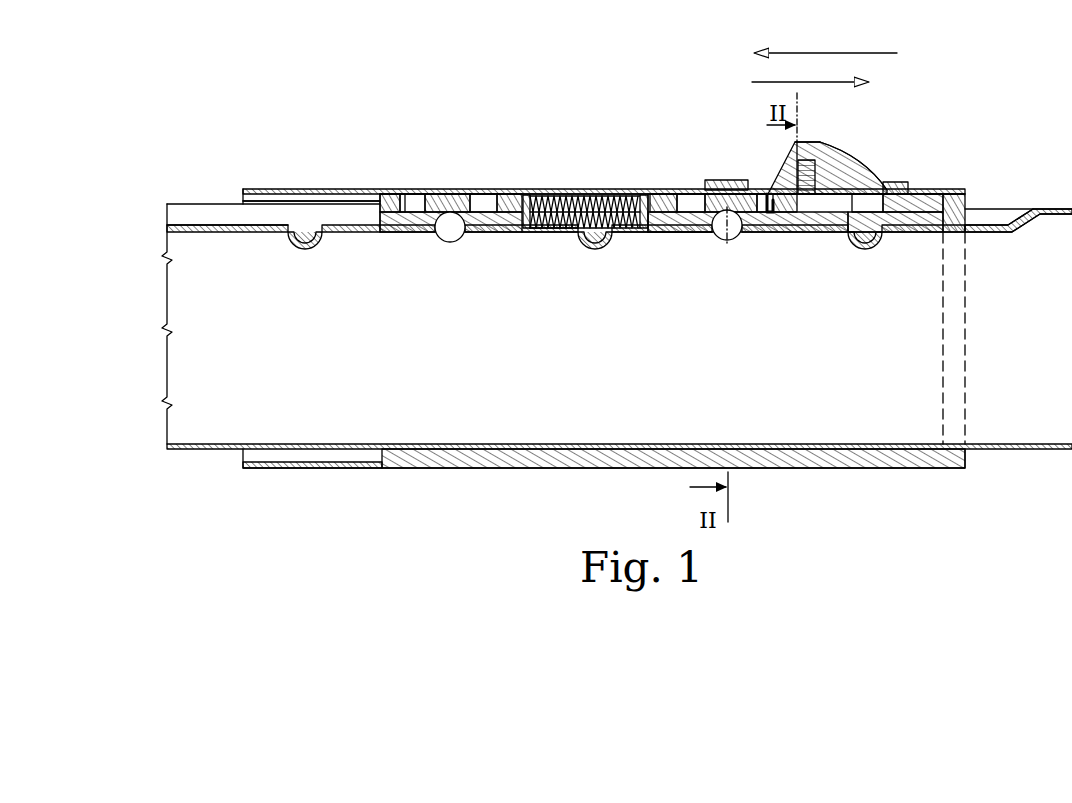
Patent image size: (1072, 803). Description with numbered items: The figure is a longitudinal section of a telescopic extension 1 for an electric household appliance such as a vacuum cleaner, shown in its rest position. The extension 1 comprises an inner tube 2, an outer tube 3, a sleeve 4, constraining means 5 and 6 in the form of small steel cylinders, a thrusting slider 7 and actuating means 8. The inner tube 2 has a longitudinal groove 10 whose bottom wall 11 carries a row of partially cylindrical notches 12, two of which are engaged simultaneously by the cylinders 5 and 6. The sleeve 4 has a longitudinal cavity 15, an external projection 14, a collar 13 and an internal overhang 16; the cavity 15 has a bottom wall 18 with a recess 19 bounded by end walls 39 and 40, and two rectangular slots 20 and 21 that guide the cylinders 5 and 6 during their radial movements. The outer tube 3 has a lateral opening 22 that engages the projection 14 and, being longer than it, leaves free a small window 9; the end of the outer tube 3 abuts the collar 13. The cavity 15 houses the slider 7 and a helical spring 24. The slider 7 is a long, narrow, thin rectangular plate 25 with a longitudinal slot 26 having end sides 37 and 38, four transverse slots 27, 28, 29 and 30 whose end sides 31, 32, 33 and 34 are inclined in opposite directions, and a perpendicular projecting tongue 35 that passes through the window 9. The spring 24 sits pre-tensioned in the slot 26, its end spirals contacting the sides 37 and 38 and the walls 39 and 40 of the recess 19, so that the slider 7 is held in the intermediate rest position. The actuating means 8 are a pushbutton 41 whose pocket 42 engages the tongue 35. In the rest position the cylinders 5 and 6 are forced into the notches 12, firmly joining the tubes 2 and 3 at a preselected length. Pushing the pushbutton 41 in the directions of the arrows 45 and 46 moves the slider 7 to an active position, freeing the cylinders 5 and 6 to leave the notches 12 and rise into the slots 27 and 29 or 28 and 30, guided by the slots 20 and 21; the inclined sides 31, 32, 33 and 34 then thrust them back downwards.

The telescopic extension 1 is at (673, 181).
The inner tube 2 is at (206, 201).
The outer tube 3 is at (336, 186).
The sleeve 4 is at (906, 212).
The constraining means 5 is at (450, 229).
The constraining means 6 is at (735, 236).
The thrusting slider 7 is at (801, 233).
The actuating means 8 is at (887, 95).
The window 9 is at (784, 193).
The groove 10 is at (356, 220).
The bottom wall 11 is at (238, 231).
The notches 12 is at (318, 248).
The collar 13 is at (973, 208).
The external projection 14 is at (938, 192).
The longitudinal cavity 15 is at (853, 186).
The internal overhang 16 is at (382, 230).
The bottom wall 18 is at (853, 247).
The recess 19 is at (548, 233).
The rectangular slot 20 is at (423, 229).
The rectangular slot 21 is at (697, 233).
The lateral opening 22 is at (897, 178).
The helical spring 24 is at (588, 199).
The rectangular plate 25 is at (430, 207).
The slot 26 is at (623, 199).
The slot 27 is at (397, 197).
The slot 28 is at (492, 196).
The slot 29 is at (690, 202).
The slot 30 is at (757, 199).
The end side 31 is at (404, 199).
The end side 32 is at (488, 202).
The end side 33 is at (684, 233).
The end side 34 is at (778, 233).
The projecting tongue 35 is at (810, 143).
The end side 37 is at (527, 199).
The end side 38 is at (652, 199).
The end wall 39 is at (538, 233).
The end wall 40 is at (633, 233).
The pushbutton 41 is at (881, 104).
The pocket 42 is at (783, 184).
The arrow 45 is at (788, 81).
The arrow 46 is at (838, 57).